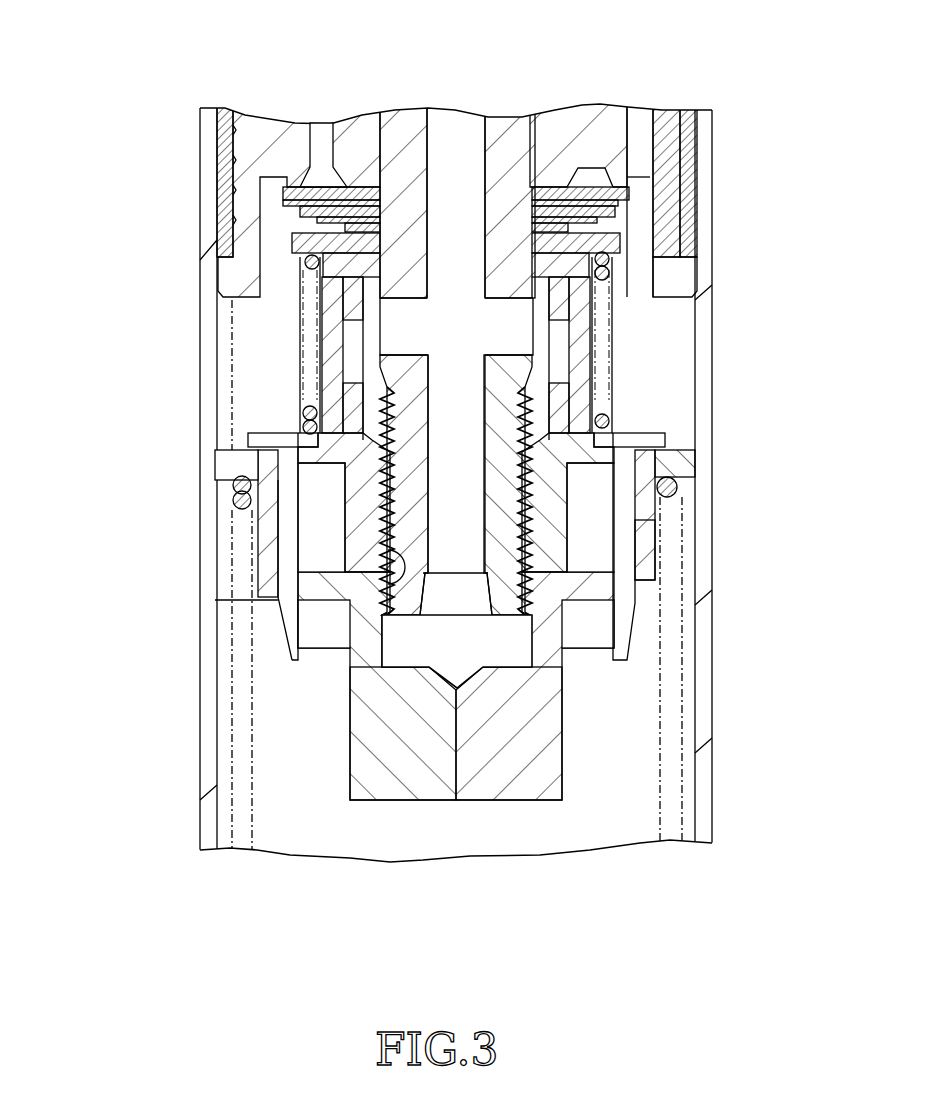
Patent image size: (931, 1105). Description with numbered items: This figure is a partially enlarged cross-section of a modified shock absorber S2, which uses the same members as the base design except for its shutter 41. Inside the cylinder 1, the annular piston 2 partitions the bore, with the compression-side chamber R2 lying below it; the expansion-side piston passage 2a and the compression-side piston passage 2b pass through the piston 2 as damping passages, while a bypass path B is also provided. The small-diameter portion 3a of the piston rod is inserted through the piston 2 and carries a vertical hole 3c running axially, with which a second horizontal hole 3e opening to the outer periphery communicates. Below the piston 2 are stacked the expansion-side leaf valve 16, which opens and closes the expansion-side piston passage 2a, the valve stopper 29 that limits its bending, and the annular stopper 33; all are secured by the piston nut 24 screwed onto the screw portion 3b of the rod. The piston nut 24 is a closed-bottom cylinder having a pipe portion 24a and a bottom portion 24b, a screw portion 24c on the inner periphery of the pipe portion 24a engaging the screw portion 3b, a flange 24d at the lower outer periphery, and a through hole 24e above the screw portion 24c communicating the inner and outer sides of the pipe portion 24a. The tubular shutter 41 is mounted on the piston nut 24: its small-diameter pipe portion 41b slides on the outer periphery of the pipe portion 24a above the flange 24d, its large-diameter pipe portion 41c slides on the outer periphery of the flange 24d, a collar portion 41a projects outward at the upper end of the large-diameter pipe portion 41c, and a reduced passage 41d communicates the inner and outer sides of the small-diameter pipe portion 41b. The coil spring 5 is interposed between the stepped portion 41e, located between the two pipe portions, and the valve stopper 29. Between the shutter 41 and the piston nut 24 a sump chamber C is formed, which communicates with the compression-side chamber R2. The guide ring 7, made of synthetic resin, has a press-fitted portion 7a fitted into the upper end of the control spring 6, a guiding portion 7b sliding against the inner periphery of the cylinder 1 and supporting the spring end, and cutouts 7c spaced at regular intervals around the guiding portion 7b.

The shock absorber S2 is at (150, 125).
The cylinder 1 is at (715, 700).
The piston 2 is at (722, 128).
The expansion-side piston passage 2a is at (325, 126).
The compression-side piston passage 2b is at (641, 125).
The coil spring 5 is at (675, 277).
The small-diameter portion 3a is at (557, 127).
The screw portion 3b is at (492, 603).
The vertical hole 3c is at (447, 118).
The second horizontal hole 3e is at (397, 320).
The bypass path B is at (494, 122).
The expansion-side leaf valve 16 is at (640, 203).
The valve stopper 29 is at (630, 248).
The annular stopper 33 is at (303, 262).
The shutter 41 is at (648, 413).
The collar portion 41a is at (290, 425).
The small-diameter pipe portion 41b is at (330, 340).
The large-diameter pipe portion 41c is at (290, 540).
The reduced passage 41d is at (607, 415).
The stepped portion 41e is at (300, 410).
The guide ring 7 is at (709, 463).
The press-fitted portion 7a is at (600, 548).
The guiding portion 7b is at (672, 450).
The cutouts 7c is at (235, 462).
The control spring 6 is at (235, 495).
The piston nut 24 is at (350, 812).
The pipe portion 24a is at (560, 493).
The bottom portion 24b is at (474, 733).
The screw portion 24c is at (395, 560).
The flange 24d is at (298, 645).
The through hole 24e is at (350, 358).
The sump chamber C is at (625, 590).
The compression-side chamber R2 is at (620, 770).